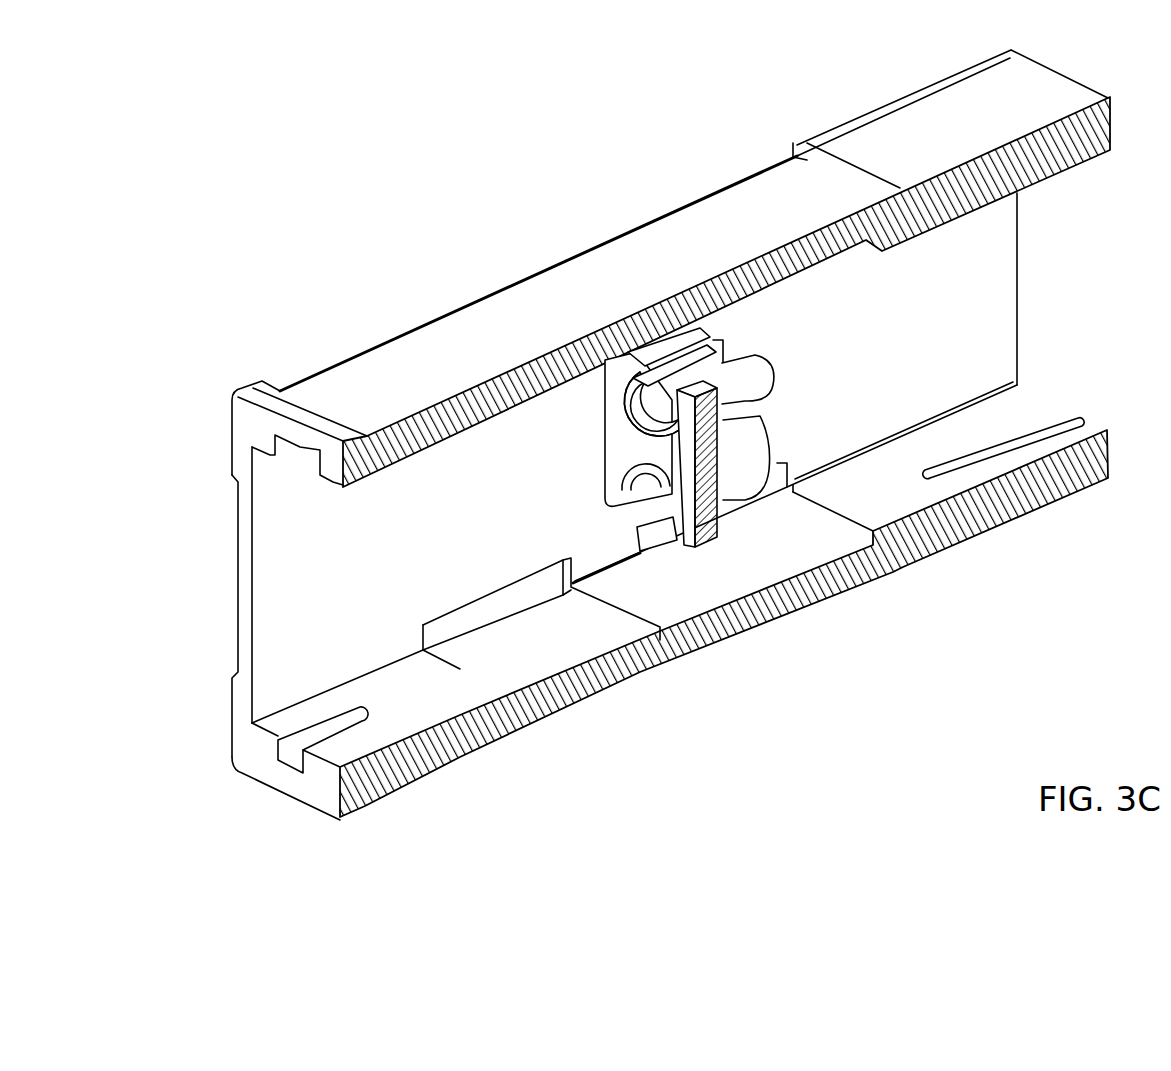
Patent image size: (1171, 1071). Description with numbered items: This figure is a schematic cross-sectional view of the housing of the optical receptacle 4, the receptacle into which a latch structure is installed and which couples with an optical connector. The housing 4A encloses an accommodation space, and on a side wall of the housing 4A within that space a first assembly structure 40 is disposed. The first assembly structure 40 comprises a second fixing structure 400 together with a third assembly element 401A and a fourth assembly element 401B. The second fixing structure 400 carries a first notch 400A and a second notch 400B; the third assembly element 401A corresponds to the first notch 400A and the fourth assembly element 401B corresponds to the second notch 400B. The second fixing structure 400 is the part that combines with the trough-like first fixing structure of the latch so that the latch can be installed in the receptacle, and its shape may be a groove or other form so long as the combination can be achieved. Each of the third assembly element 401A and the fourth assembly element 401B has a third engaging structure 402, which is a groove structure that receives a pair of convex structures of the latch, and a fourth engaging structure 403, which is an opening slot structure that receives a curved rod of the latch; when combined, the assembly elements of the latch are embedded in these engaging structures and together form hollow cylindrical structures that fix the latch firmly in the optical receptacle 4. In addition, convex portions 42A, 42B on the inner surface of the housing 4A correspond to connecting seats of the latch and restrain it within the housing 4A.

The optical receptacle 4 is at (242, 382).
The housing 4A is at (715, 213).
The first assembly structure 40 is at (732, 501).
The convex portion 42A is at (673, 333).
The convex portion 42B is at (662, 506).
The second fixing structure 400 is at (623, 442).
The first notch 400A is at (603, 368).
The second notch 400B is at (652, 478).
The third assembly element 401A is at (738, 398).
The fourth assembly element 401B is at (740, 482).
The third engaging structure 402 is at (752, 345).
The fourth engaging structure 403 is at (585, 368).